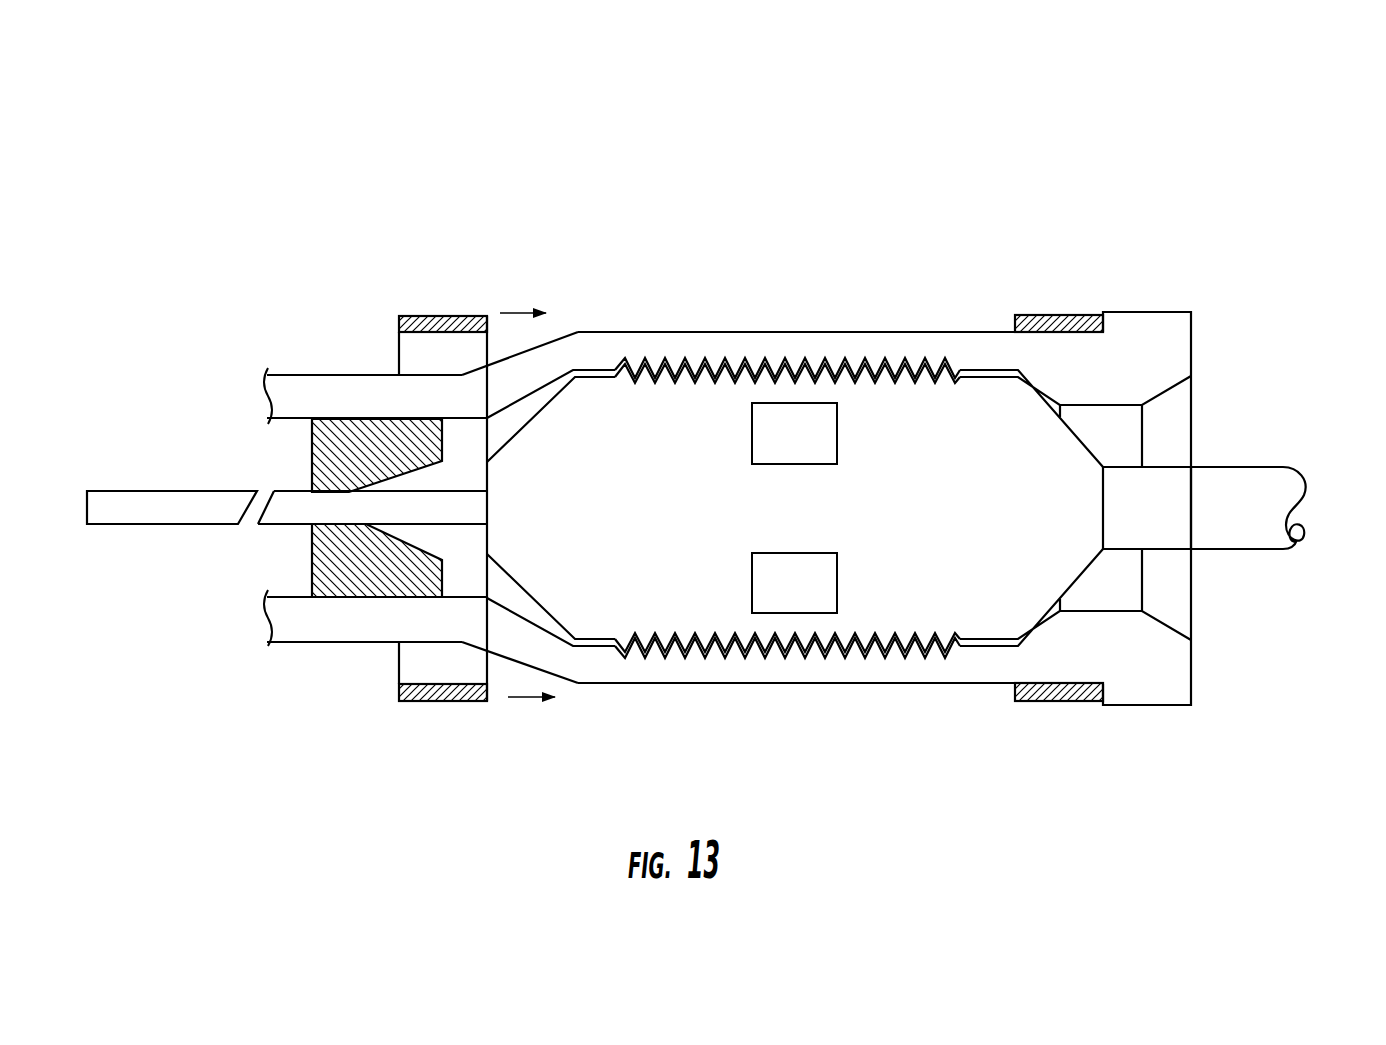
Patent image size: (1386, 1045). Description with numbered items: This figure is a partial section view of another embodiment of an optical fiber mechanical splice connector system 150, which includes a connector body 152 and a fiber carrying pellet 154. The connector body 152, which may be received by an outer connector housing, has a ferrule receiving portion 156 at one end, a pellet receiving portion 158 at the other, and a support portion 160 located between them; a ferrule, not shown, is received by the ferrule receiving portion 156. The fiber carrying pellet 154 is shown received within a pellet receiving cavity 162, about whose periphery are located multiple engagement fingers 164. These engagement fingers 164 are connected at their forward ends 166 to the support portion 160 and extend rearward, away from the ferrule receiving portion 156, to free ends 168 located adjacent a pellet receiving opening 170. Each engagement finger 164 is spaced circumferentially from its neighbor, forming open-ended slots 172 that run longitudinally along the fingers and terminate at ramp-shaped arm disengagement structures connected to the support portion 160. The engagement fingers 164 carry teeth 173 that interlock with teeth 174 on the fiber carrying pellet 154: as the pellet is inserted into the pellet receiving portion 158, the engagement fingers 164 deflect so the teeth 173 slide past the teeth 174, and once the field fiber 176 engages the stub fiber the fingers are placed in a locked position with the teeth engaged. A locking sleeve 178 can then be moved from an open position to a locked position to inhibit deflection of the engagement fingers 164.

The optical fiber mechanical splice connector system 150 is at (917, 192).
The connector body 152 is at (662, 307).
The fiber carrying pellet 154 is at (952, 402).
The ferrule receiving portion 156 is at (313, 318).
The pellet receiving portion 158 is at (803, 243).
The support portion 160 is at (563, 337).
The pellet receiving cavity 162 is at (527, 608).
The engagement fingers 164 is at (1130, 328).
The forward ends 166 is at (605, 338).
The free ends 168 is at (1167, 358).
The pellet receiving opening 170 is at (1196, 592).
The open-ended slots 172 is at (882, 337).
The teeth 173 is at (736, 358).
The teeth 174 is at (791, 362).
The field fiber 176 is at (1228, 486).
The locking sleeve 178 is at (438, 313).